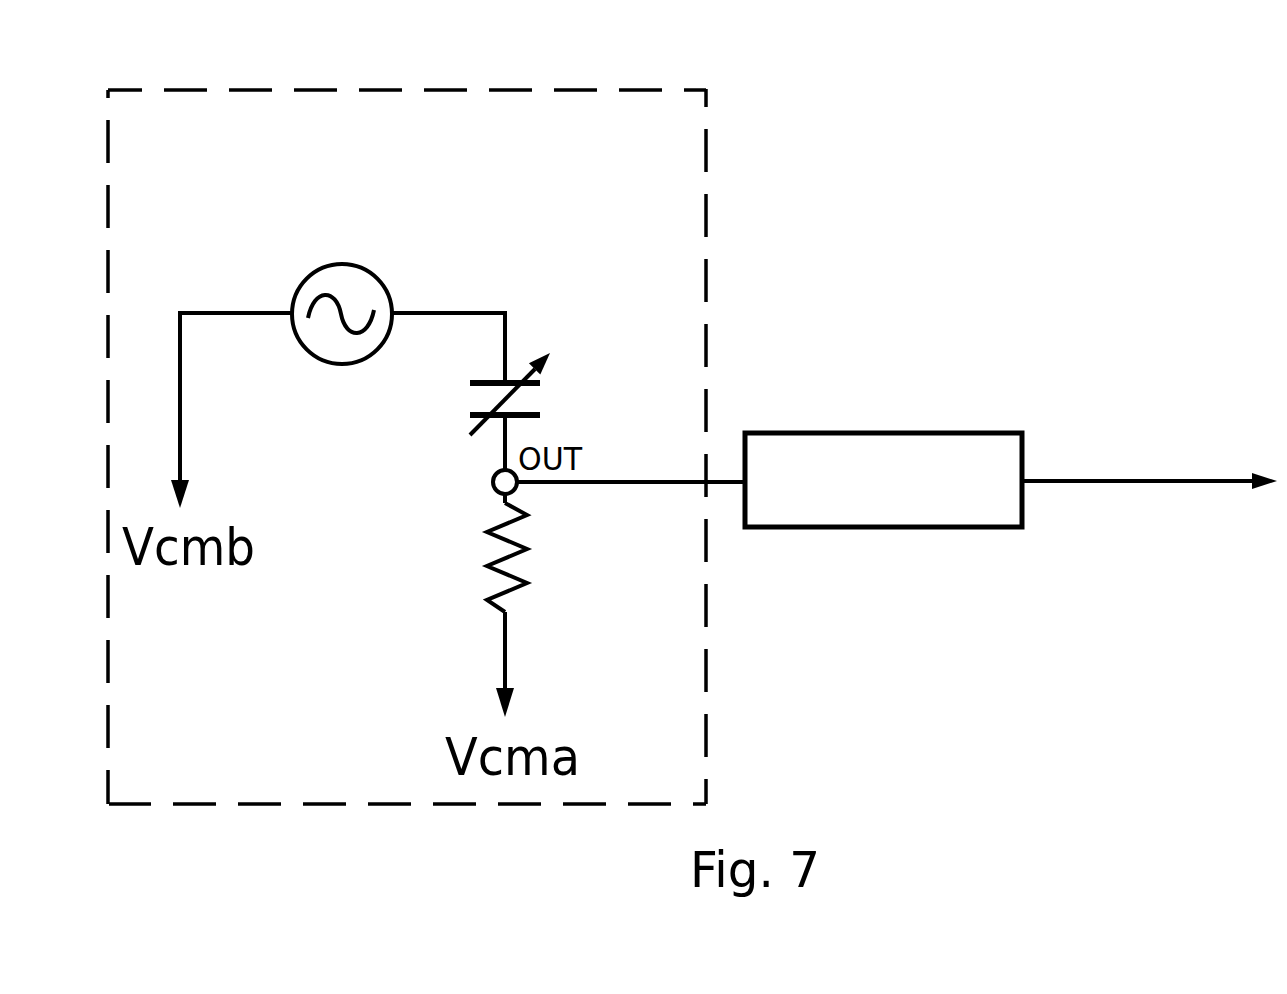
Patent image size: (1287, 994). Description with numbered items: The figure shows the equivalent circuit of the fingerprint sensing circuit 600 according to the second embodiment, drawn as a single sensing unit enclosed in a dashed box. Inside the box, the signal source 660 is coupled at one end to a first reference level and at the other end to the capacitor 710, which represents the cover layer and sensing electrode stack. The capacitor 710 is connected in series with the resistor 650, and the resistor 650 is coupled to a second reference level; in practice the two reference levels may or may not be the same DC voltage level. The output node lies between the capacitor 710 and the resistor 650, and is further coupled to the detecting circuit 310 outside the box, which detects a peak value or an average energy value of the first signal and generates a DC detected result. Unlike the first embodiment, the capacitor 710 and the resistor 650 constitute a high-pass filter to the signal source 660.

The fingerprint sensing circuit 600 is at (640, 89).
The signal source 660 is at (387, 285).
The capacitor 710 is at (518, 345).
The resistor 650 is at (545, 578).
The detecting circuit 310 is at (878, 432).